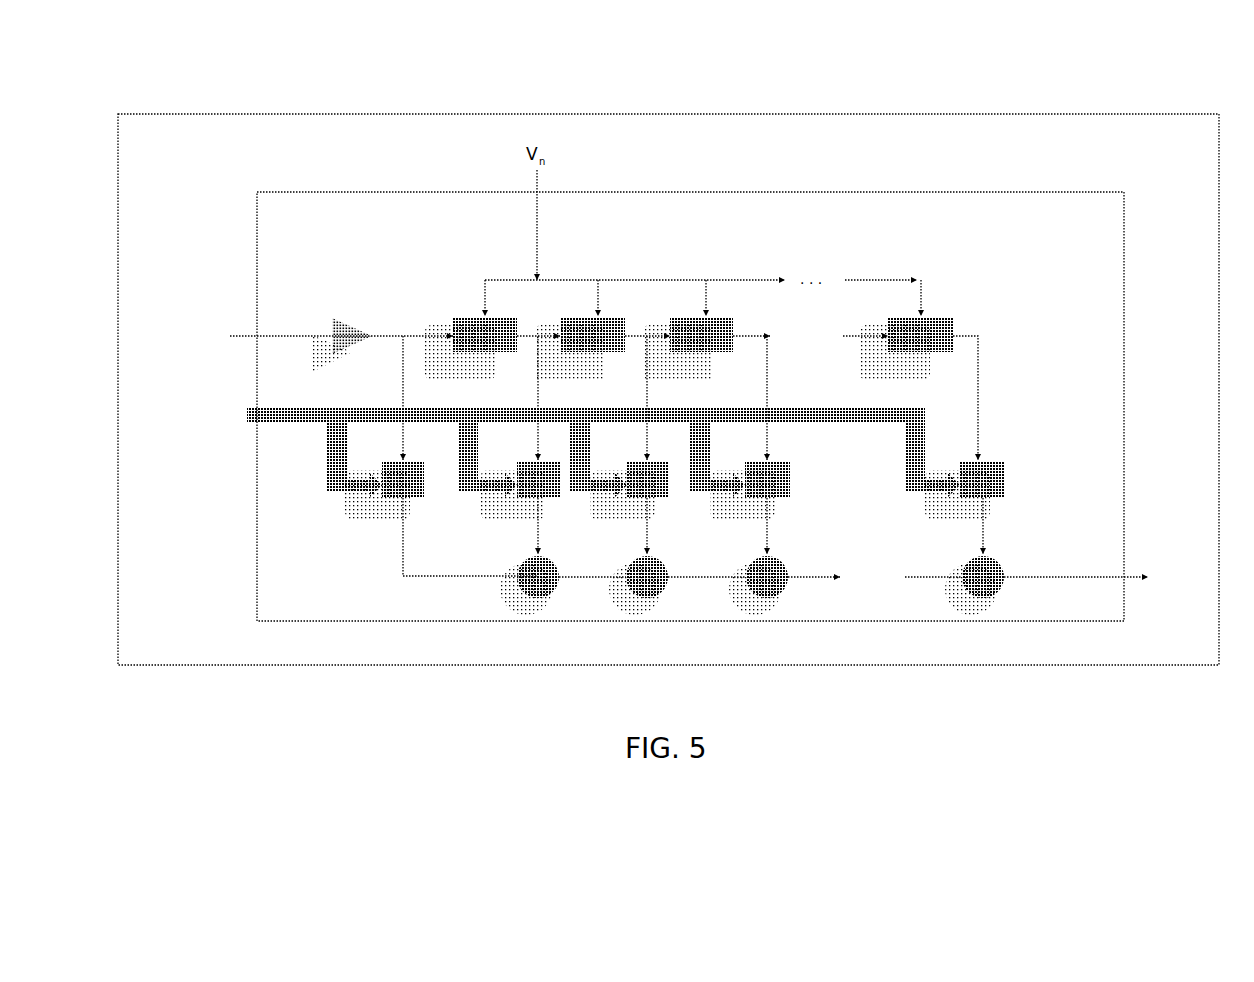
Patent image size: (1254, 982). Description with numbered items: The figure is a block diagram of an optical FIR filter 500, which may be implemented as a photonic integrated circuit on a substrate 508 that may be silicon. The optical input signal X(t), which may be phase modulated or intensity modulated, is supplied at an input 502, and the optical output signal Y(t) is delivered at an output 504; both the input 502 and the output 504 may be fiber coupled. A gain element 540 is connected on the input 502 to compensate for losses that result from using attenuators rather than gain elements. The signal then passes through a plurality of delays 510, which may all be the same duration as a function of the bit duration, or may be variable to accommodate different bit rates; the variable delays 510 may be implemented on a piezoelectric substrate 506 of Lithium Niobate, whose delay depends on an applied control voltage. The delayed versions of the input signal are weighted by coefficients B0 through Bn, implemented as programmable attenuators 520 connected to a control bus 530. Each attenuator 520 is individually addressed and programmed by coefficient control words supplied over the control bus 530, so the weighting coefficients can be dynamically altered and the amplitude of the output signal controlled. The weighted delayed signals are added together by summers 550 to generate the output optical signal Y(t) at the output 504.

The optical FIR filter 500 is at (937, 100).
The input 502 is at (318, 318).
The output 504 is at (1096, 593).
The piezoelectric substrate 506 is at (680, 218).
The substrate 508 is at (320, 150).
The delays 510 is at (460, 313).
The programmable attenuators 520 is at (1012, 468).
The control bus 530 is at (290, 428).
The gain element 540 is at (320, 318).
The summers 550 is at (626, 597).